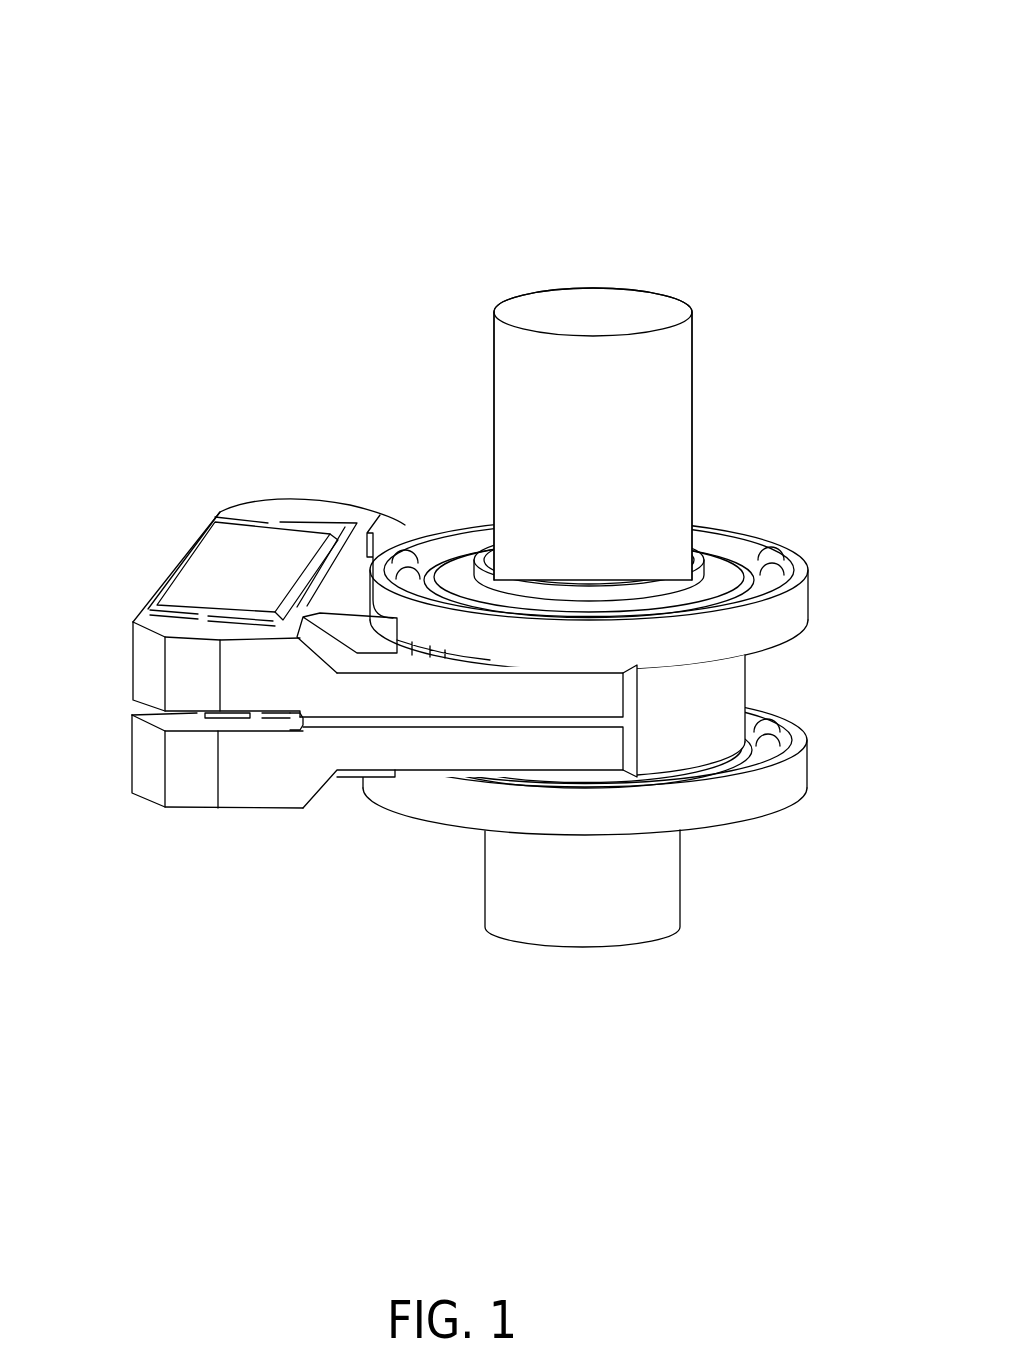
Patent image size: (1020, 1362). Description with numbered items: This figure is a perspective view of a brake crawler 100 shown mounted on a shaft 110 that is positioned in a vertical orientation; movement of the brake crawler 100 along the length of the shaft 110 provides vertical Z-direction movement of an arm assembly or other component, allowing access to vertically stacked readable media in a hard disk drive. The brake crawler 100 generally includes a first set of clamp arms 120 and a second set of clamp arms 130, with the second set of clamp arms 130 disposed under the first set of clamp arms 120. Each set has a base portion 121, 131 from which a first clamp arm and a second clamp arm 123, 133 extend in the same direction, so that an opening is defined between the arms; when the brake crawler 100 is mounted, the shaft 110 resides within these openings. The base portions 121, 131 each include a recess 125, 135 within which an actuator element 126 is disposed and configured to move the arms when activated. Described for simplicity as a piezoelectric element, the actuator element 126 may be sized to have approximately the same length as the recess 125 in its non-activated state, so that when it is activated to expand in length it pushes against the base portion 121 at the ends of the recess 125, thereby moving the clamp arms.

The brake crawler 100 is at (128, 60).
The shaft 110 is at (607, 423).
The first set of clamp arms 120 is at (115, 615).
The base portion 121 is at (305, 507).
The second clamp arm 123 is at (580, 705).
The recess 125 is at (152, 608).
The actuator element 126 is at (230, 563).
The second set of clamp arms 130 is at (115, 710).
The base portion 131 is at (198, 778).
The second clamp arm 133 is at (580, 747).
The recess 135 is at (255, 722).